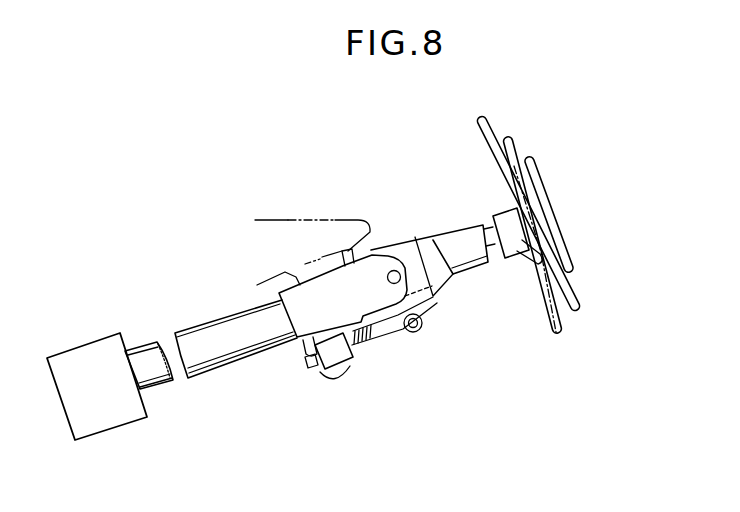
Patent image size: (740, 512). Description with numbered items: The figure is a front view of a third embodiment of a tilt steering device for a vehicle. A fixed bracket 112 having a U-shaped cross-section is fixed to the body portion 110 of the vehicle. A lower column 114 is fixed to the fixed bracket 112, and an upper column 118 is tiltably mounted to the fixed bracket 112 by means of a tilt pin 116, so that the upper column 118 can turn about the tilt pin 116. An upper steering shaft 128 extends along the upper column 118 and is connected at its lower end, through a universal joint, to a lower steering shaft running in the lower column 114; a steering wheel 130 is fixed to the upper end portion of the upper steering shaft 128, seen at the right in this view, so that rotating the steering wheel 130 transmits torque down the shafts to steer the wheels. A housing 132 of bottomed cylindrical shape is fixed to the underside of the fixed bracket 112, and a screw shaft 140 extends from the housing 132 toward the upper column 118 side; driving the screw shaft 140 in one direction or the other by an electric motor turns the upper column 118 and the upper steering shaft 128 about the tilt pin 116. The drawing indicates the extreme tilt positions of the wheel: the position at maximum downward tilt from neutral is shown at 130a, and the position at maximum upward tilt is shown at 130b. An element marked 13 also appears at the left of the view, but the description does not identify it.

The motor 13 is at (109, 405).
The body portion 110 is at (293, 218).
The fixed bracket 112 is at (343, 305).
The lower column 114 is at (243, 350).
The tilt pin 116 is at (395, 270).
The upper column 118 is at (481, 273).
The upper steering shaft 128 is at (489, 231).
The steering wheel 130 is at (514, 142).
The steering wheel lower tilt position 130a is at (554, 333).
The steering wheel upper tilt position 130b is at (574, 266).
The housing 132 is at (343, 357).
The screw shaft 140 is at (407, 333).